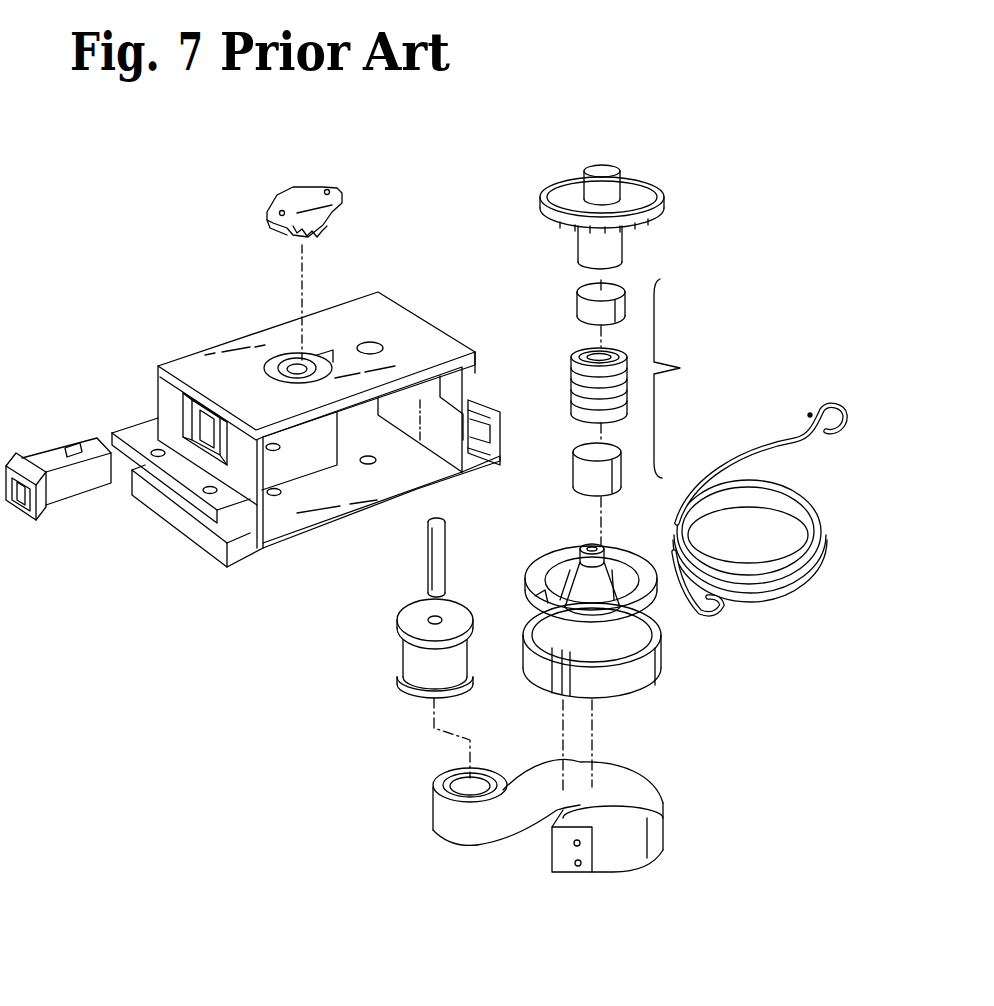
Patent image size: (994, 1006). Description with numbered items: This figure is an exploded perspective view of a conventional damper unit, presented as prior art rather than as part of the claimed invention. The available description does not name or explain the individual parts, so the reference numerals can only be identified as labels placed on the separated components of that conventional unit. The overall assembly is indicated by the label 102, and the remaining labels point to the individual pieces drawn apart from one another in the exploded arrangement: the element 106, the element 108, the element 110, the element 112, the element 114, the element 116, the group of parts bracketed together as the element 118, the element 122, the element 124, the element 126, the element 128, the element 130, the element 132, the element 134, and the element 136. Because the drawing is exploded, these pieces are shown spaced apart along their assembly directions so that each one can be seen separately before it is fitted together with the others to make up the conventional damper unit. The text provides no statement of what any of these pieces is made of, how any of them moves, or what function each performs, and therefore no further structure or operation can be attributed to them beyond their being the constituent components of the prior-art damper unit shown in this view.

The prior art lock assembly 102 is at (713, 134).
The housing 106 is at (383, 318).
The plug connector 108 is at (58, 433).
The strap lever 110 is at (630, 853).
The ring 112 is at (630, 625).
The torsion spring 114 is at (778, 598).
The cam plate 116 is at (338, 205).
The spring assembly 118 is at (670, 412).
The cup 122 is at (637, 677).
The spool roller 124 is at (400, 677).
The lower spacer 126 is at (583, 478).
The boss 128 is at (587, 580).
The coil spring 130 is at (575, 388).
The upper spacer 132 is at (583, 305).
The knob 134 is at (557, 222).
The pin axis 136 is at (293, 237).